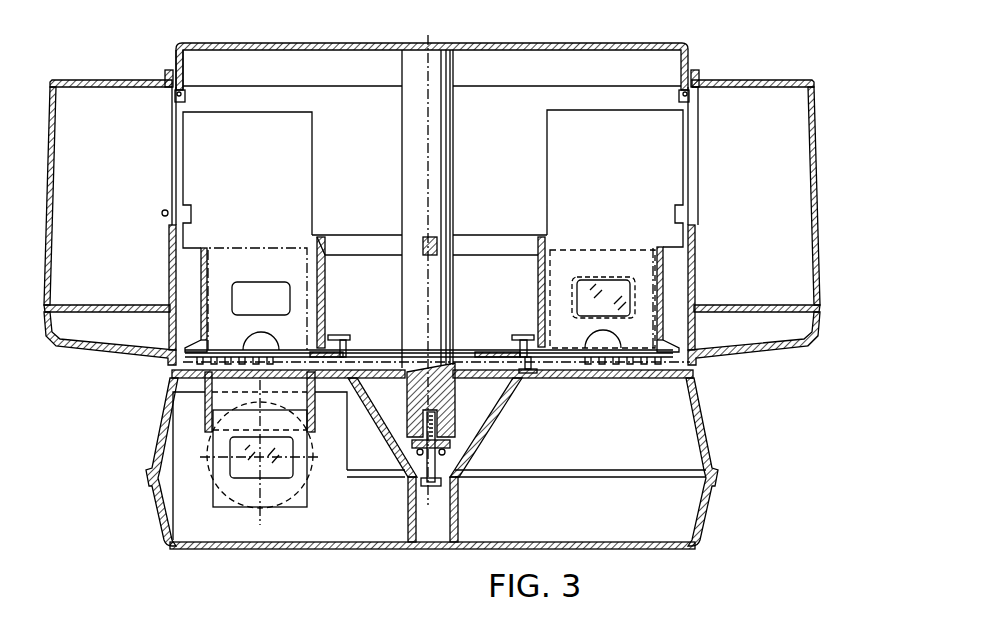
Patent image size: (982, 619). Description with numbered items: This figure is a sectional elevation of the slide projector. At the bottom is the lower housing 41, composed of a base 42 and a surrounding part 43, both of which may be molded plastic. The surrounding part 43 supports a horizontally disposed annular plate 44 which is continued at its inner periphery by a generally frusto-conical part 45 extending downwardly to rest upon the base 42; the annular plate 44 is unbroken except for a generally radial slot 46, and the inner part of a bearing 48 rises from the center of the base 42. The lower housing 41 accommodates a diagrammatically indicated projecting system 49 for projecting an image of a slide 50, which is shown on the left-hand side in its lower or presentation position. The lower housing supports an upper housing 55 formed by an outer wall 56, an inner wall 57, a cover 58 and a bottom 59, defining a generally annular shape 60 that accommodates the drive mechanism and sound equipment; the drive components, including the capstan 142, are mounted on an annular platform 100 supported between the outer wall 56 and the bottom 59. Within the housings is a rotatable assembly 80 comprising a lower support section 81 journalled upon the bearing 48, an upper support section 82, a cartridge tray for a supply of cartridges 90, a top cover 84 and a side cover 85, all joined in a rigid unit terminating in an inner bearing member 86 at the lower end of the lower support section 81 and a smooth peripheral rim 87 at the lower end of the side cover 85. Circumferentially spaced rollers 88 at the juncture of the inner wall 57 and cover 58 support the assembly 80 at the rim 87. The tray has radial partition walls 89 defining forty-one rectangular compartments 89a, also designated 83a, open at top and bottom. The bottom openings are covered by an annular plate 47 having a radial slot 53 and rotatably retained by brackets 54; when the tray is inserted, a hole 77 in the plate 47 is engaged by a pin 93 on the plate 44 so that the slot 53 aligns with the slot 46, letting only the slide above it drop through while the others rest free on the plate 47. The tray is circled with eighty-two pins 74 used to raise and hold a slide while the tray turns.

The lower housing 41 is at (454, 477).
The base 42 is at (258, 550).
The surrounding part 43 is at (710, 450).
The annular plate 44 is at (612, 378).
The frusto-conical part 45 is at (488, 434).
The radial slot 46 is at (220, 383).
The annular plate 47 is at (352, 356).
The bearing 48 is at (458, 503).
The projecting system 49 is at (316, 490).
The slide 50 is at (600, 290).
The radial slot 53 is at (258, 343).
The brackets 54 is at (338, 335).
The upper housing 55 is at (767, 214).
The outer wall 56 is at (811, 148).
The inner wall 57 is at (699, 188).
The cover 58 is at (718, 80).
The bottom 59 is at (740, 354).
The annular shape 60 is at (122, 269).
The pins 74 is at (175, 358).
The hole 77 is at (511, 376).
The rotatable assembly 80 is at (684, 42).
The lower support section 81 is at (452, 416).
The upper support section 82 is at (336, 237).
The compartments 83a is at (536, 303).
The top cover 84 is at (280, 50).
The side cover 85 is at (177, 62).
The inner bearing member 86 is at (452, 446).
The peripheral rim 87 is at (186, 92).
The rollers 88 is at (186, 98).
The radial partition walls 89 is at (565, 250).
The compartments 89a is at (537, 272).
The cartridges 90 is at (314, 168).
The pin 93 is at (540, 374).
The annular platform 100 is at (68, 308).
The capstan 142 is at (165, 208).